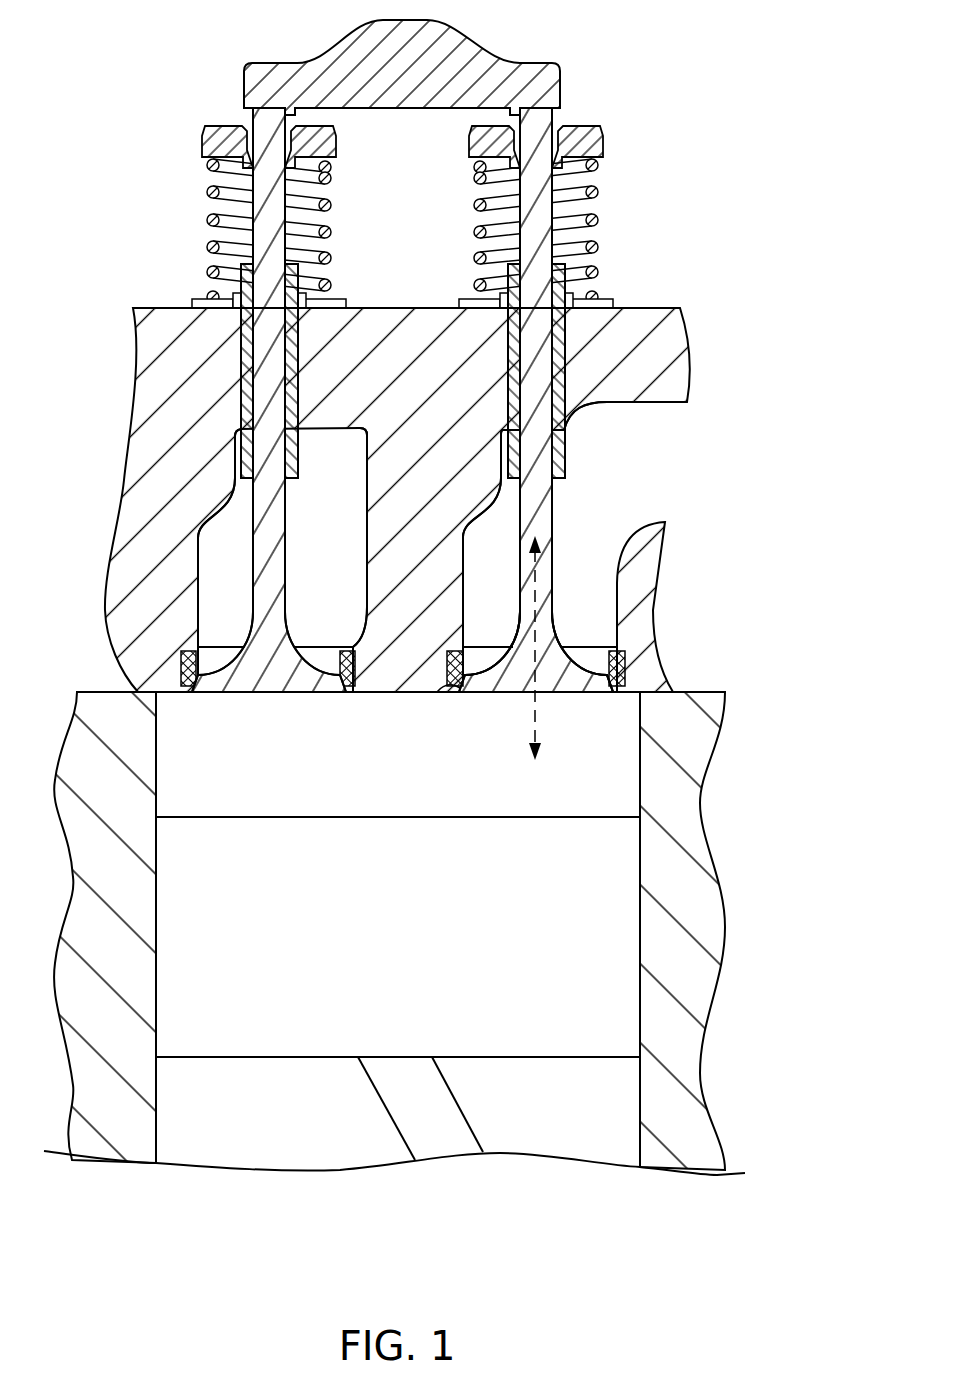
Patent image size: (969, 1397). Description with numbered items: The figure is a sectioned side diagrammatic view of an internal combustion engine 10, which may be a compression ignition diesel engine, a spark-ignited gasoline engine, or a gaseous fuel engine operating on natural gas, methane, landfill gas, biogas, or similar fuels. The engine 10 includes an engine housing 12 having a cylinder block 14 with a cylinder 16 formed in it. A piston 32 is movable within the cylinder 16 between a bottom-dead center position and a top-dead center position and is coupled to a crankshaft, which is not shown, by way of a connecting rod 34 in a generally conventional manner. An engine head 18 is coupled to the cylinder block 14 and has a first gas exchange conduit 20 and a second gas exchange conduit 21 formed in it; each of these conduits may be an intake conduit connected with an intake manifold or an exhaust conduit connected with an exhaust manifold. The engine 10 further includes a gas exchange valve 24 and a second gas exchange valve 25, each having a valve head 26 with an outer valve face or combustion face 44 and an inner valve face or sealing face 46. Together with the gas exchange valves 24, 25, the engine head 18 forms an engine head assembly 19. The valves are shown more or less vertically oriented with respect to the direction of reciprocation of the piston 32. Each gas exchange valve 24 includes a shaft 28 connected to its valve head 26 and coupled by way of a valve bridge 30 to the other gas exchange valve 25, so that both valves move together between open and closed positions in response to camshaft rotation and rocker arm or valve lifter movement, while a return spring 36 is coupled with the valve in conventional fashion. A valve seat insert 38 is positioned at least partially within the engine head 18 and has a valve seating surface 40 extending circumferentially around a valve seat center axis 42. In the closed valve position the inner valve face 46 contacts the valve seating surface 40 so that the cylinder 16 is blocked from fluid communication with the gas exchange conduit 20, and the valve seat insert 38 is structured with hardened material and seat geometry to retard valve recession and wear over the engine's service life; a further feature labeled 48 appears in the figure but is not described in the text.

The internal combustion engine 10 is at (772, 174).
The engine housing 12 is at (733, 652).
The cylinder block 14 is at (692, 779).
The cylinder 16 is at (387, 788).
The engine head 18 is at (633, 587).
The engine head assembly 19 is at (682, 542).
The first gas exchange conduit 20 is at (620, 560).
The second gas exchange conduit 21 is at (205, 570).
The gas exchange valve 24 is at (550, 523).
The second gas exchange valve 25 is at (278, 528).
The valve head 26 is at (558, 664).
The shaft 28 is at (538, 402).
The valve bridge 30 is at (522, 72).
The piston 32 is at (617, 967).
The connecting rod 34 is at (445, 1108).
The return spring 36 is at (596, 190).
The valve seat insert 38 is at (470, 655).
The valve seating surface 40 is at (474, 676).
The valve seat center axis 42 is at (540, 728).
The combustion face 44 is at (598, 702).
The sealing face 46 is at (620, 663).
The valve seat face 48 is at (440, 676).